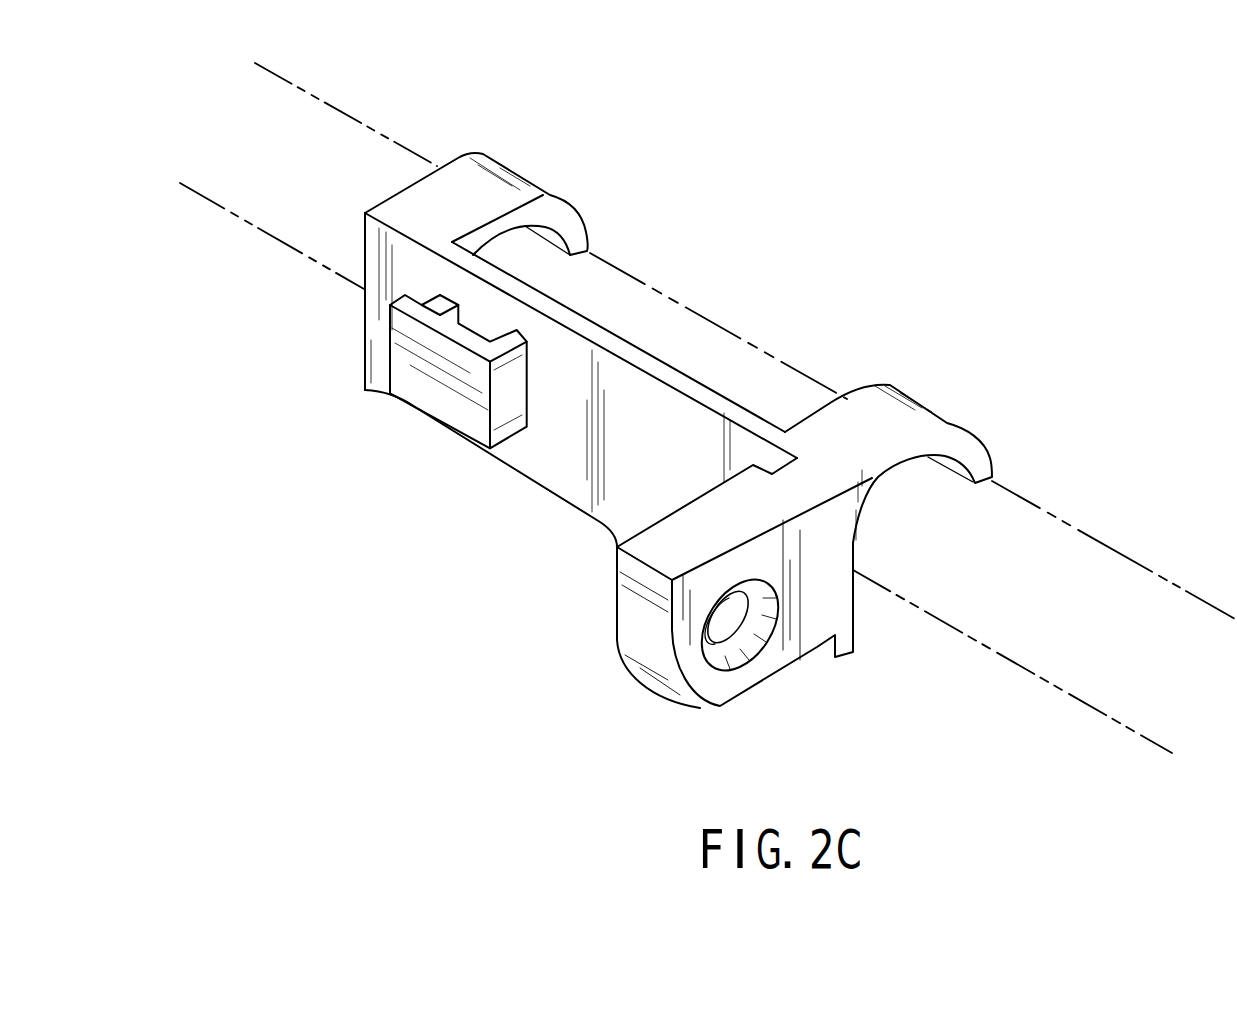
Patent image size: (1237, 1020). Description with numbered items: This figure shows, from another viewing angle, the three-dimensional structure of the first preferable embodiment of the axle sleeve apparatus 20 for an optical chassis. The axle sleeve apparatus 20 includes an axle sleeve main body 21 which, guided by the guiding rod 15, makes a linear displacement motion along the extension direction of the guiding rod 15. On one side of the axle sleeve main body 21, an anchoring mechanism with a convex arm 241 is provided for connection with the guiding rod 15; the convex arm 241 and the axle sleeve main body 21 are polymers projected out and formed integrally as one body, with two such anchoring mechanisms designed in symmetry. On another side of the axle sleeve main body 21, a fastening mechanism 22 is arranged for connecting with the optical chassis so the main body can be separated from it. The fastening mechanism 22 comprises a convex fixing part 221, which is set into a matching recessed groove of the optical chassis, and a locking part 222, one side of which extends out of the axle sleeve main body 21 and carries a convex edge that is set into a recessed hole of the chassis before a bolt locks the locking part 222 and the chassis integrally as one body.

The guiding rod 15 is at (1103, 557).
The axle sleeve apparatus 20 is at (1069, 373).
The axle sleeve main body 21 is at (668, 430).
The fastening mechanism 22 is at (613, 730).
The convex fixing part 221 is at (440, 404).
The locking part 222 is at (637, 642).
The convex arm 241 is at (903, 406).